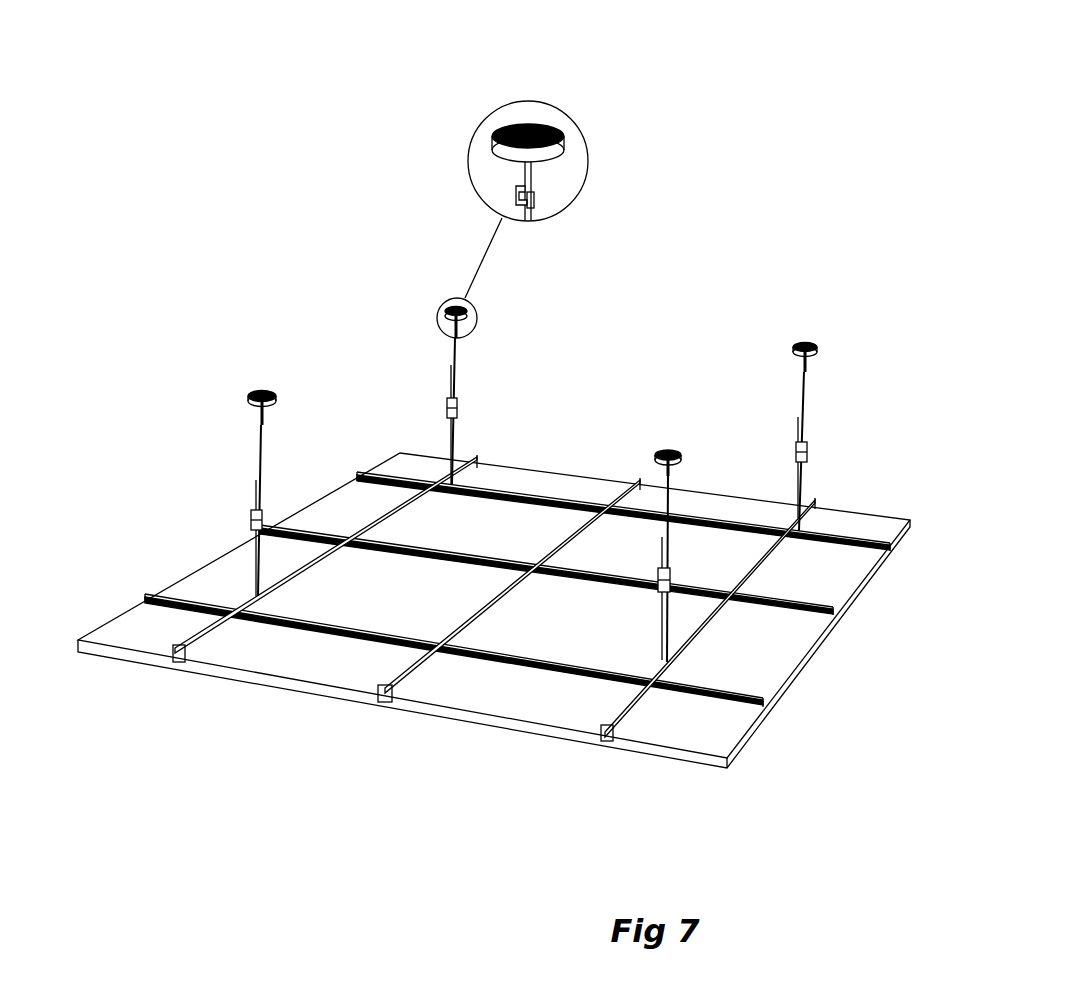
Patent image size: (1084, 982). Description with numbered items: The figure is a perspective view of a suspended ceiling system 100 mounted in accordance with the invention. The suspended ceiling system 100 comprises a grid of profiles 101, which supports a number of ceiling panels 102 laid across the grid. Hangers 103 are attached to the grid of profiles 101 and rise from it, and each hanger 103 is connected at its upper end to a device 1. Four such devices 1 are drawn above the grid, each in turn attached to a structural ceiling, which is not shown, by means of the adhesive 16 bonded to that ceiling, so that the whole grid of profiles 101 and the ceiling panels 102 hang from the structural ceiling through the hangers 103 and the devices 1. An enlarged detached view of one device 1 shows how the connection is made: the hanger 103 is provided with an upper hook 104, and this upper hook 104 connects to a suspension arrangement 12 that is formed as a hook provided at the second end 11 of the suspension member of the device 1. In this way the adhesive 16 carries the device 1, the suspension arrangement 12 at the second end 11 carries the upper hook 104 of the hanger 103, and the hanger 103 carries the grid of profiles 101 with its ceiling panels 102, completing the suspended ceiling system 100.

The device 1 is at (468, 108).
The second end 11 is at (538, 200).
The suspension arrangement 12 is at (516, 190).
The adhesive 16 is at (527, 124).
The suspended ceiling system 100 is at (148, 505).
The grid of profiles 101 is at (882, 532).
The ceiling panels 102 is at (380, 598).
The hanger 103 is at (460, 374).
The upper hook 104 is at (530, 222).